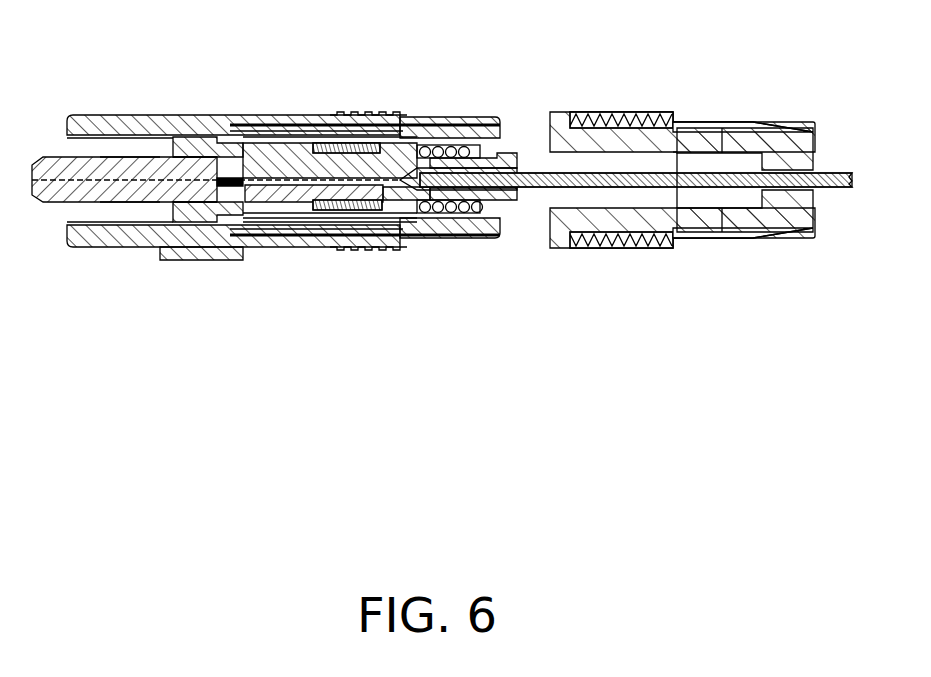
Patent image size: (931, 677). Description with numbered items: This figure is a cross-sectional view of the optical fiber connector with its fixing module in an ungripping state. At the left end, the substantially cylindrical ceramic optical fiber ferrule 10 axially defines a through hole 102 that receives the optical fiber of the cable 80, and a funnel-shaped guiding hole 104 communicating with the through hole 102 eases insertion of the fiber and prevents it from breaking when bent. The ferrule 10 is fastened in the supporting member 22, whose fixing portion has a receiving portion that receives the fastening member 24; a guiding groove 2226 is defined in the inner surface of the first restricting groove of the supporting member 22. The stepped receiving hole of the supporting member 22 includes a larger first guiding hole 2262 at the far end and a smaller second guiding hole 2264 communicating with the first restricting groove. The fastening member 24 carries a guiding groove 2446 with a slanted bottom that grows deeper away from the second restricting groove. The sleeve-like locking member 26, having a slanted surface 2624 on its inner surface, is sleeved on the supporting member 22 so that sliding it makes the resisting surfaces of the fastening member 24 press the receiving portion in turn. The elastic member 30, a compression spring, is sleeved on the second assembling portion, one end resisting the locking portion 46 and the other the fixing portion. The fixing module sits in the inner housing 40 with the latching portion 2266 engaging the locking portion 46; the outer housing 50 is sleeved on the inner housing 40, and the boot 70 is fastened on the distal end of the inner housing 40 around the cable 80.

The optical fiber ferrule 10 is at (50, 196).
The through hole 102 is at (126, 190).
The guiding hole 104 is at (213, 186).
The supporting member 22 is at (202, 118).
The guiding groove 2226 is at (238, 132).
The first guiding hole 2262 is at (520, 190).
The second guiding hole 2264 is at (410, 197).
The latching portion 2266 is at (508, 158).
The fastening member 24 is at (276, 202).
The guiding groove 2446 is at (358, 143).
The locking member 26 is at (307, 120).
The slanted surface 2624 is at (316, 211).
The elastic member 30 is at (458, 145).
The inner housing 40 is at (420, 118).
The locking portion 46 is at (488, 157).
The outer housing 50 is at (102, 118).
The boot 70 is at (690, 120).
The cable 80 is at (703, 186).